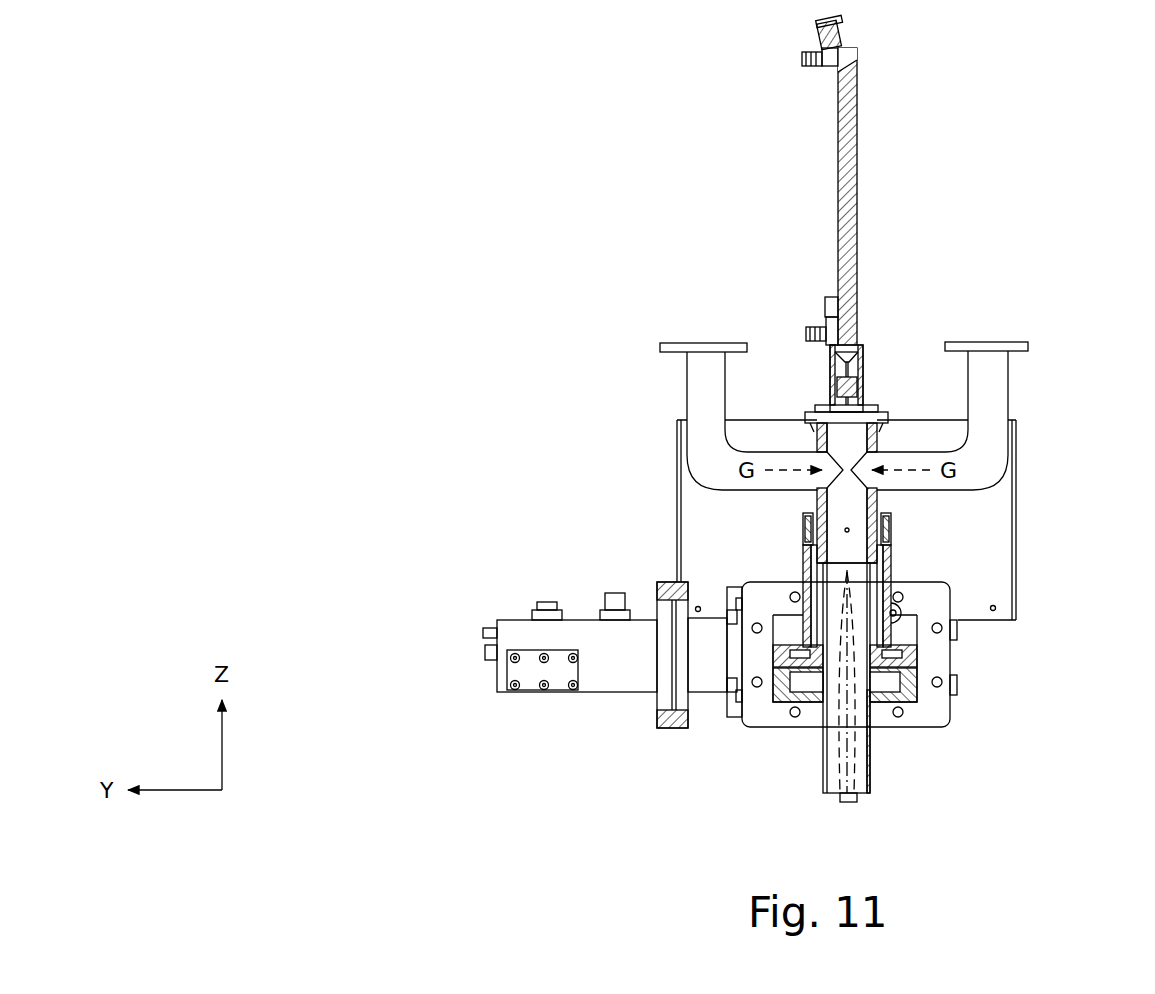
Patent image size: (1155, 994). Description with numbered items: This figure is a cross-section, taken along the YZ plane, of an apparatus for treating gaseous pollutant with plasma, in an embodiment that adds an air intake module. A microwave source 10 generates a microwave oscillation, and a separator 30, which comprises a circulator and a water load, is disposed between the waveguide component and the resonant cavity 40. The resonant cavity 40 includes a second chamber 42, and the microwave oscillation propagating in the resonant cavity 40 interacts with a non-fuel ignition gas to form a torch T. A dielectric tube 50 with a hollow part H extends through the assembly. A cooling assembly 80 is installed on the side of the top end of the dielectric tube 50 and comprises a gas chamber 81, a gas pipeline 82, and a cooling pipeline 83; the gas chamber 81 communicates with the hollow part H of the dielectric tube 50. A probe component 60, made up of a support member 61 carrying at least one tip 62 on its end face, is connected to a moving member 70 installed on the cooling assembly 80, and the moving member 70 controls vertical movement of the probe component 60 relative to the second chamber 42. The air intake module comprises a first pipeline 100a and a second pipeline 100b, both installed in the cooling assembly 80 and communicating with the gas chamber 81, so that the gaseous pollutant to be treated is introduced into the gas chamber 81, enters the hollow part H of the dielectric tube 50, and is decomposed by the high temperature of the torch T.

The microwave source 10 is at (1017, 530).
The separator 30 is at (510, 618).
The resonant cavity 40 is at (780, 682).
The second chamber 42 is at (810, 682).
The dielectric tube 50 is at (870, 752).
The probe component 60 is at (904, 320).
The support member 61 is at (850, 372).
The tip 62 is at (860, 398).
The moving member 70 is at (858, 120).
The cooling assembly 80 is at (803, 568).
The gas chamber 81 is at (837, 518).
The gas pipeline 82 is at (890, 518).
The cooling pipeline 83 is at (885, 615).
The first pipeline 100a is at (690, 375).
The second pipeline 100b is at (1000, 375).
The hollow part H is at (905, 678).
The torch T is at (850, 803).